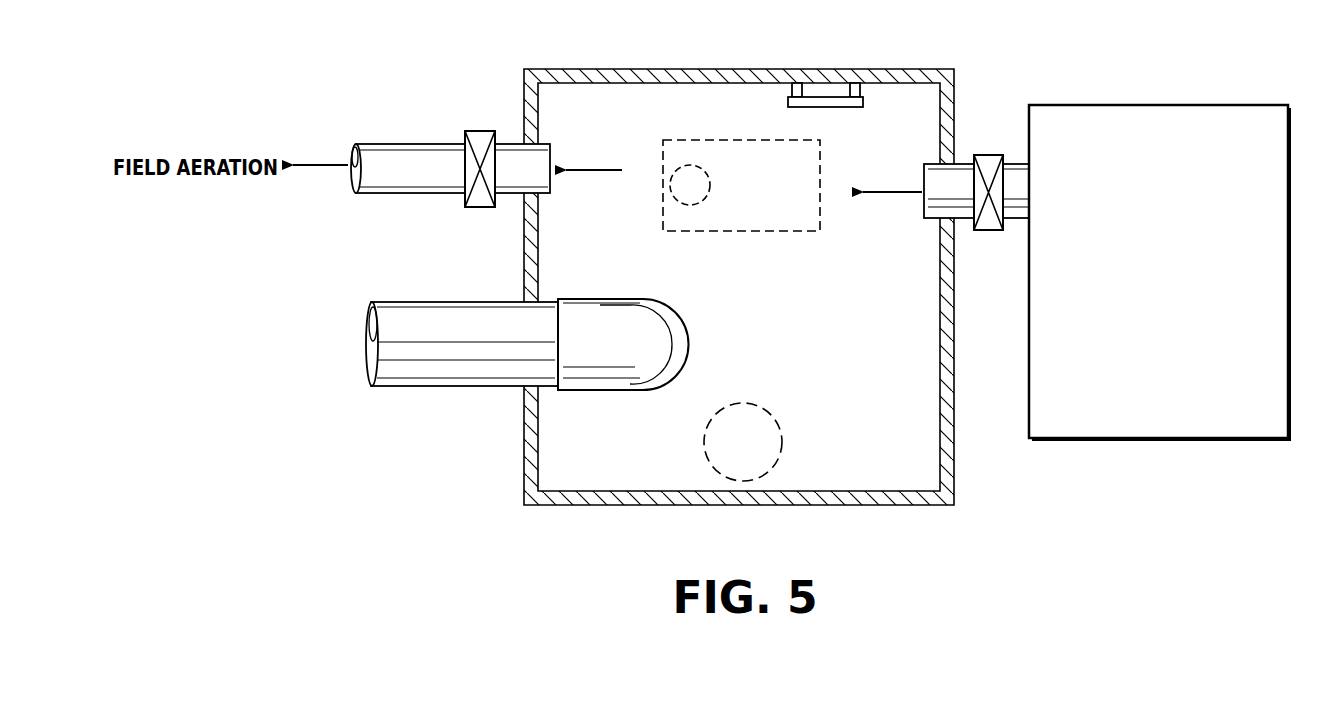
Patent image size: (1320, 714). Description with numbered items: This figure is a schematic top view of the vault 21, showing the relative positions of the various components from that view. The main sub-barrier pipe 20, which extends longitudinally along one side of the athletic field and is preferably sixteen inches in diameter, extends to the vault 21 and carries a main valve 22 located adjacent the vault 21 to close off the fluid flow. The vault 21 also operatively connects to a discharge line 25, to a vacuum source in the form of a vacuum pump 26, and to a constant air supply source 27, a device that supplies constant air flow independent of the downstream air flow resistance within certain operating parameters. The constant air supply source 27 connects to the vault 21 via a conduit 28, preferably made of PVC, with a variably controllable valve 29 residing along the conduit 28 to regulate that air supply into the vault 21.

The main sub-barrier pipe 20 is at (400, 144).
The vault 21 is at (700, 69).
The main valve 22 is at (480, 131).
The discharge line 25 is at (420, 302).
The vacuum pump 26 is at (717, 232).
The constant air supply source 27 is at (1143, 369).
The conduit 28 is at (1015, 165).
The variably controllable valve 29 is at (990, 155).